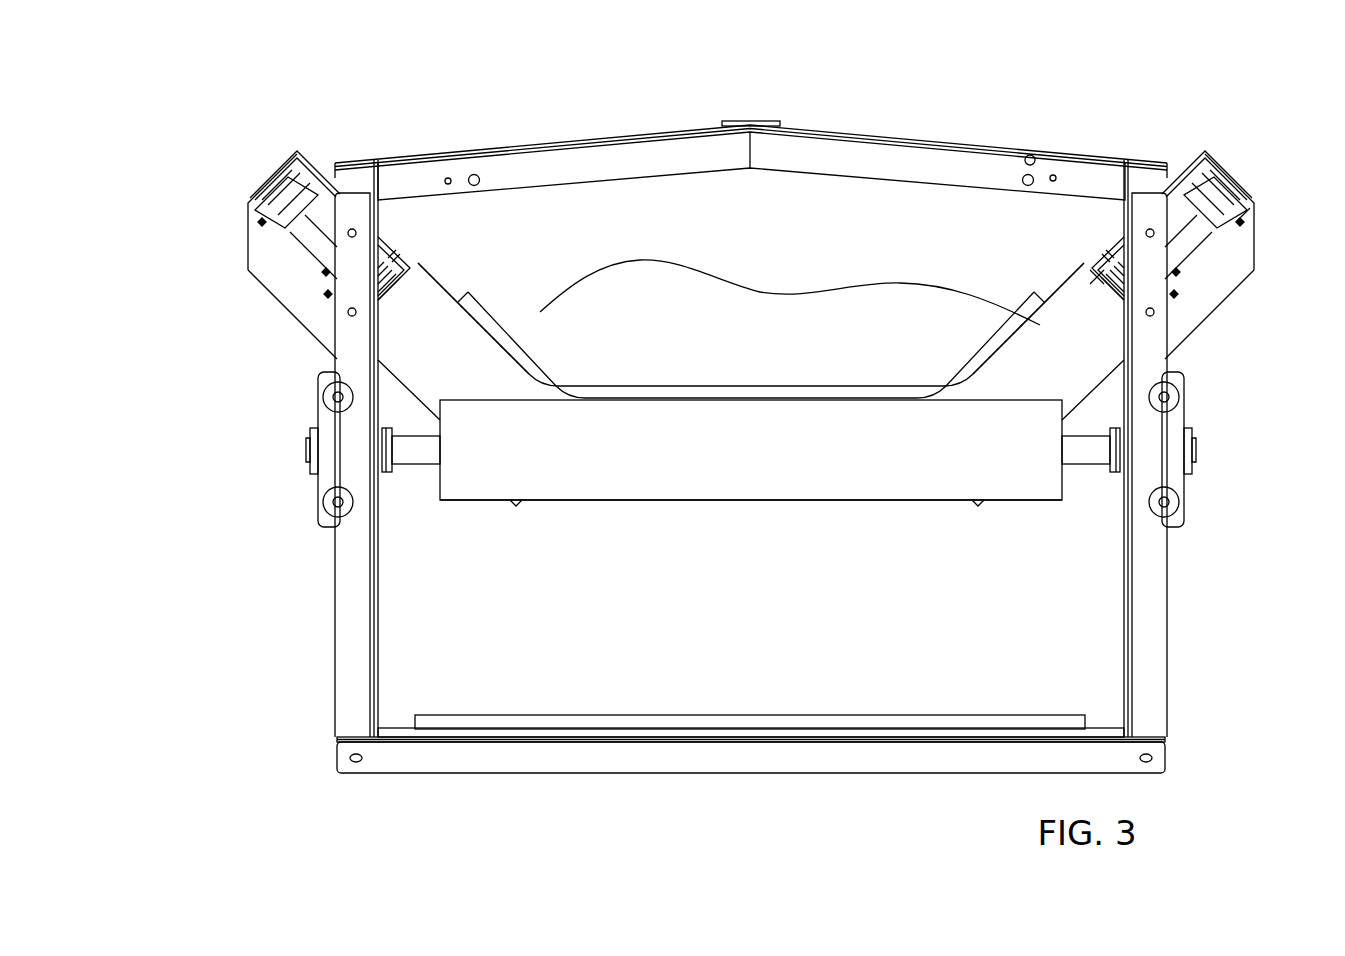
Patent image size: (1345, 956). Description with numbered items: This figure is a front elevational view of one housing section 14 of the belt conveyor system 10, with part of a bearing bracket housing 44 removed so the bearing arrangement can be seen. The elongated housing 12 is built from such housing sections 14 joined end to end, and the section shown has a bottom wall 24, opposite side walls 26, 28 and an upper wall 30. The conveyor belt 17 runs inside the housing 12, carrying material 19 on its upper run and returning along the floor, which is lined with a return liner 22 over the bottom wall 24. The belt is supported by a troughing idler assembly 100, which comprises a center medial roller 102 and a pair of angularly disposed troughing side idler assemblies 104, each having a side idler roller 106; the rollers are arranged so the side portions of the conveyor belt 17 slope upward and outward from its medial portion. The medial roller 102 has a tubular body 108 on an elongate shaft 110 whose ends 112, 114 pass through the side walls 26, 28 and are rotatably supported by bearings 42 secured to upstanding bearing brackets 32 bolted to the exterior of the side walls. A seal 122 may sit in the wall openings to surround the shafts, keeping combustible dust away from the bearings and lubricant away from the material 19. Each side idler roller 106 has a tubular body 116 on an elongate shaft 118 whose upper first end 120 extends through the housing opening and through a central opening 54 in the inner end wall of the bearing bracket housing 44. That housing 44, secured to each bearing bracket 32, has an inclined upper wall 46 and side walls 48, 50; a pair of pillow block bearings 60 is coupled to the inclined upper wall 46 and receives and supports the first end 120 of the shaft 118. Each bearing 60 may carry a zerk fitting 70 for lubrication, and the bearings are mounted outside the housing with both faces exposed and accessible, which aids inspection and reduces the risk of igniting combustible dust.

The belt conveyor system 10 is at (374, 92).
The elongated housing 12 is at (520, 140).
The housing section 14 is at (981, 143).
The upper wall 30 is at (1038, 146).
The bearing bracket 32 is at (331, 578).
The side wall 26 is at (378, 602).
The side wall 28 is at (1125, 602).
The bottom wall 24 is at (497, 776).
The return liner 22 is at (585, 735).
The conveyor belt 17 is at (478, 722).
The material 19 is at (797, 318).
The troughing idler assembly 100 is at (756, 396).
The center medial roller 102 is at (720, 505).
The troughing side idler assembly 104 is at (530, 360).
The side idler roller 106 is at (452, 294).
The tubular body 108 is at (932, 503).
The elongate shaft 110 is at (405, 474).
The shaft end 112 is at (310, 438).
The shaft end 114 is at (1190, 438).
The tubular body 116 is at (453, 330).
The elongate shaft 118 is at (421, 268).
The seal 122 is at (1086, 272).
The bearing 42 is at (325, 410).
The bearing bracket housing 44 is at (264, 176).
The inclined upper wall 46 is at (295, 153).
The side wall 48 is at (292, 256).
The side wall 50 is at (1209, 256).
The central opening 54 is at (386, 256).
The pillow block bearing 60 is at (247, 228).
The zerk fitting 70 is at (1252, 216).
The upper first end 120 is at (258, 202).